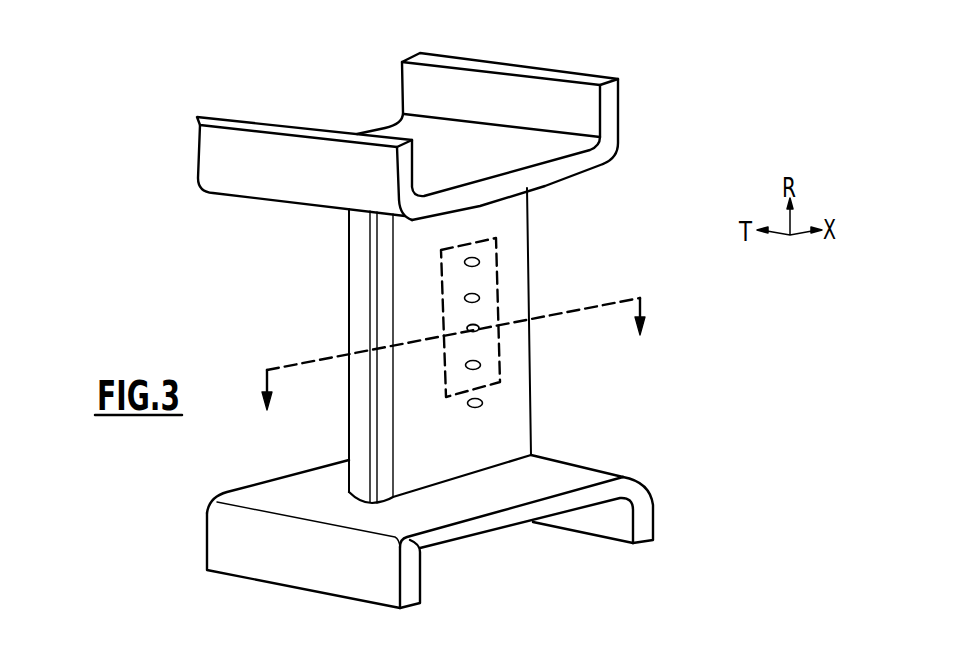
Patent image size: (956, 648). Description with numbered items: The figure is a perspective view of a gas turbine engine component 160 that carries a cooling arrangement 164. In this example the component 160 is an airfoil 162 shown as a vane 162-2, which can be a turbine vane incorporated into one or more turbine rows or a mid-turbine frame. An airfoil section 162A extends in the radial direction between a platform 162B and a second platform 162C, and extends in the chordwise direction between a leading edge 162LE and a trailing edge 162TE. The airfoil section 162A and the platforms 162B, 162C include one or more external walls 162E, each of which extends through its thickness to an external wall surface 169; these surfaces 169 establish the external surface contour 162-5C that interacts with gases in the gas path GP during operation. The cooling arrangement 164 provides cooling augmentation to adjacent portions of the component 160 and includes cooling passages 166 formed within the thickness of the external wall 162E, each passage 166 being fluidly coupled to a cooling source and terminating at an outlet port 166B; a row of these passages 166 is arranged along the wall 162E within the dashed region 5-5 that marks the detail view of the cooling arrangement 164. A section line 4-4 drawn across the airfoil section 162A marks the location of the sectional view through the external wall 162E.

The gas turbine engine component 160 is at (163, 45).
The airfoil 162 is at (189, 97).
The vane 162-2 is at (527, 330).
The airfoil section 162A is at (520, 219).
The platform 162B is at (606, 472).
The platform 162C is at (585, 167).
The external wall 162E is at (618, 134).
The leading edge 162LE is at (349, 430).
The trailing edge 162TE is at (527, 347).
The external surface contour 162-5C is at (403, 285).
The gas path GP is at (372, 313).
The cooling arrangement 164 is at (507, 211).
The cooling passage 166 is at (766, 366).
The outlet port 166B is at (478, 325).
The external wall surface 169 is at (515, 253).
The section line 4- 4 is at (454, 366).
The region 5-5 is at (440, 283).